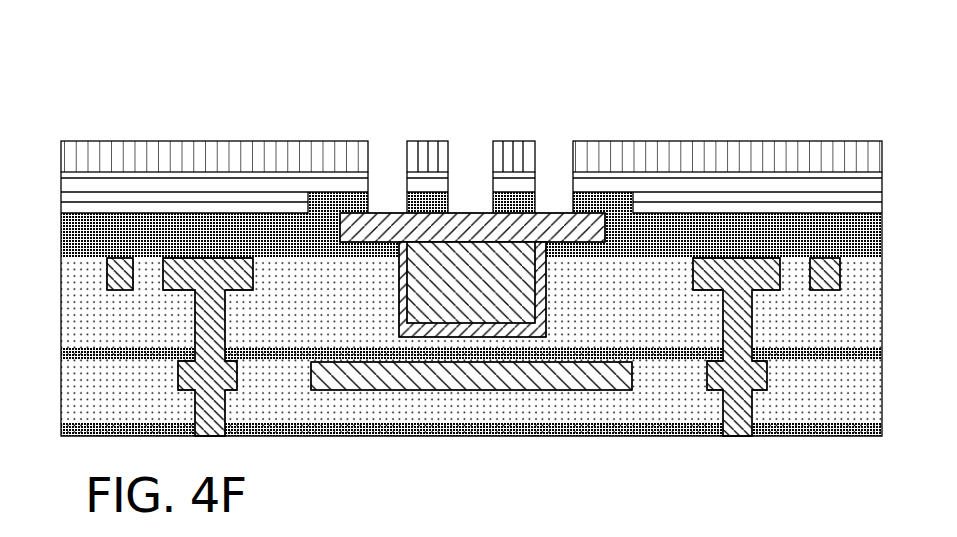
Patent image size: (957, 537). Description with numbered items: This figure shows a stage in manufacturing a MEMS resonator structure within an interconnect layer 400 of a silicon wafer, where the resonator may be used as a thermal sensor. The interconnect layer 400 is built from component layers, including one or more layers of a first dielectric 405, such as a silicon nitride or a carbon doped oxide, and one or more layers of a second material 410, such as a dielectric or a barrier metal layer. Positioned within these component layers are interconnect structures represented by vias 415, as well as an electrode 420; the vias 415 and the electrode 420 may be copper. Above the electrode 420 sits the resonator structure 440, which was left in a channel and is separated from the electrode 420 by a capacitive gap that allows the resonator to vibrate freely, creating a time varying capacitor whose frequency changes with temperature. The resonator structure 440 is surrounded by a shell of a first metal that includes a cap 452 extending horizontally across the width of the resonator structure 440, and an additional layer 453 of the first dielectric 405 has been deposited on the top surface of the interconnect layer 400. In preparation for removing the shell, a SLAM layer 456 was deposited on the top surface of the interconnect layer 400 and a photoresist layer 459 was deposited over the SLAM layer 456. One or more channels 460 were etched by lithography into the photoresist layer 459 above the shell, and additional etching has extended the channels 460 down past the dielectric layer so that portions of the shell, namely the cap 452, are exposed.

The interconnect layer 400 is at (110, 110).
The first dielectric 405 is at (630, 262).
The second material 410 is at (812, 323).
The vias 415 is at (227, 285).
The electrode 420 is at (493, 386).
The resonator structure 440 is at (493, 293).
The cap 452 is at (492, 238).
The additional layer 453 is at (250, 246).
The SLAM layer 456 is at (253, 166).
The photoresist layer 459 is at (772, 133).
The channels 460 is at (388, 137).